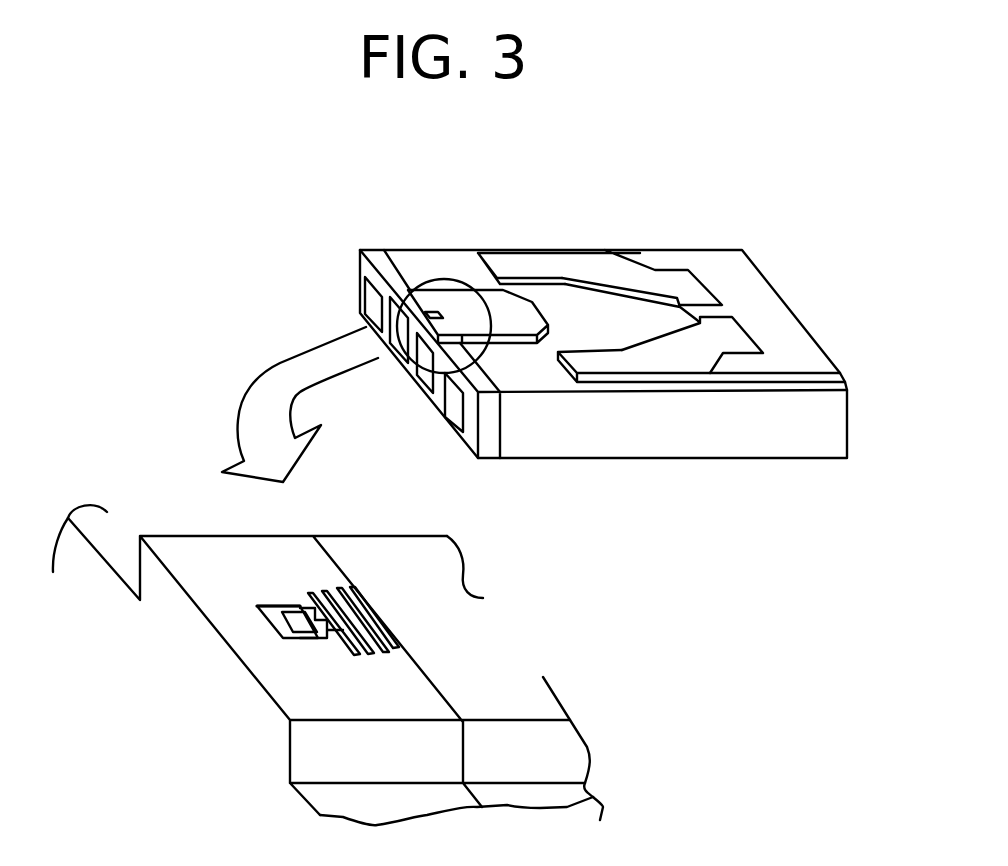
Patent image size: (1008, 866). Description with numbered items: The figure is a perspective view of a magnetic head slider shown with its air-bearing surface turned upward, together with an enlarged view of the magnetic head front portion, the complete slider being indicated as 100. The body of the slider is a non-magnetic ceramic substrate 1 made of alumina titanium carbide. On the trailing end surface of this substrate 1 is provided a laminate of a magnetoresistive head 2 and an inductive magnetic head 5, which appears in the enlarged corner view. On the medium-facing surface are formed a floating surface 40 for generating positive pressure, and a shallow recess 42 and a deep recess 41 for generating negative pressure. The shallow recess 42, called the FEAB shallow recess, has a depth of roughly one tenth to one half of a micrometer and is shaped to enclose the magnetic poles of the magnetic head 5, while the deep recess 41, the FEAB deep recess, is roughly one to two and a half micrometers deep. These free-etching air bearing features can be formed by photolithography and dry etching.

The non-magnetic ceramic substrate 1 is at (833, 420).
The magnetoresistive head 2 is at (352, 588).
The inductive magnetic head 5 is at (337, 637).
The floating surface 40 is at (512, 308).
The deep recess 41 is at (643, 333).
The shallow recess 42 is at (420, 315).
The electronic component 100 is at (494, 504).